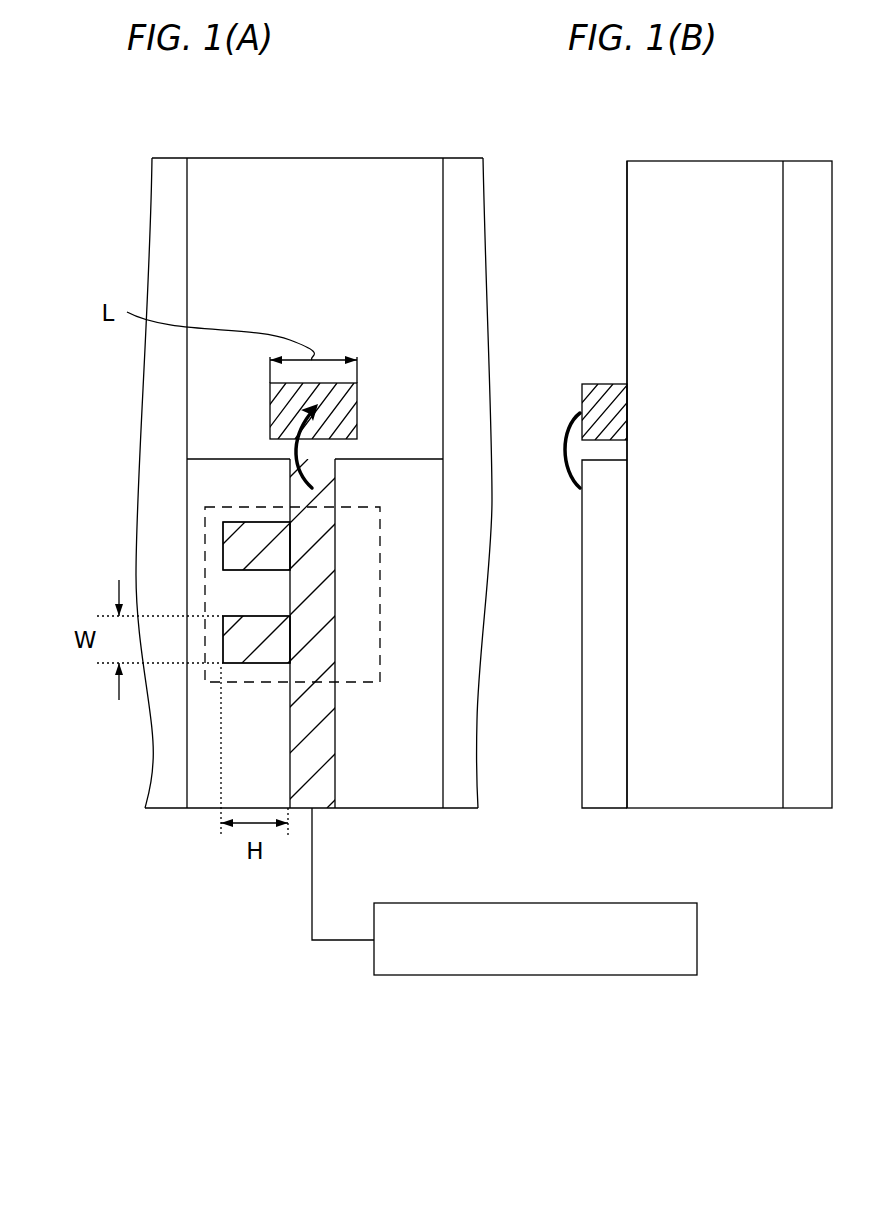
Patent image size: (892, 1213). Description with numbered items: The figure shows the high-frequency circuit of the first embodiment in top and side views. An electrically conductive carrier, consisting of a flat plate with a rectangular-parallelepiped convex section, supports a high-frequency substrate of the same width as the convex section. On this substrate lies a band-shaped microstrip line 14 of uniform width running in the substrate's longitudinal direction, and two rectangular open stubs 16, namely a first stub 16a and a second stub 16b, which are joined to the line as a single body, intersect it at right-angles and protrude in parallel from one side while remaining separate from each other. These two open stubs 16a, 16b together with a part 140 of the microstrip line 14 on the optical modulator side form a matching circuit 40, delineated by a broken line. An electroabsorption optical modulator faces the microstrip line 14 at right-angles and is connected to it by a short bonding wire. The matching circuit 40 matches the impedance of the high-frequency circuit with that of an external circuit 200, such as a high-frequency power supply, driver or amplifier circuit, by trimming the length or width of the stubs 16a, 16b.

The microstrip line 14 is at (321, 797).
The open stubs 16 is at (80, 473).
The open stub 16a is at (237, 522).
The open stub 16b is at (237, 616).
The matching circuit 40 is at (213, 685).
The part of the microstrip line 140 is at (343, 510).
The external circuit 200 is at (685, 912).